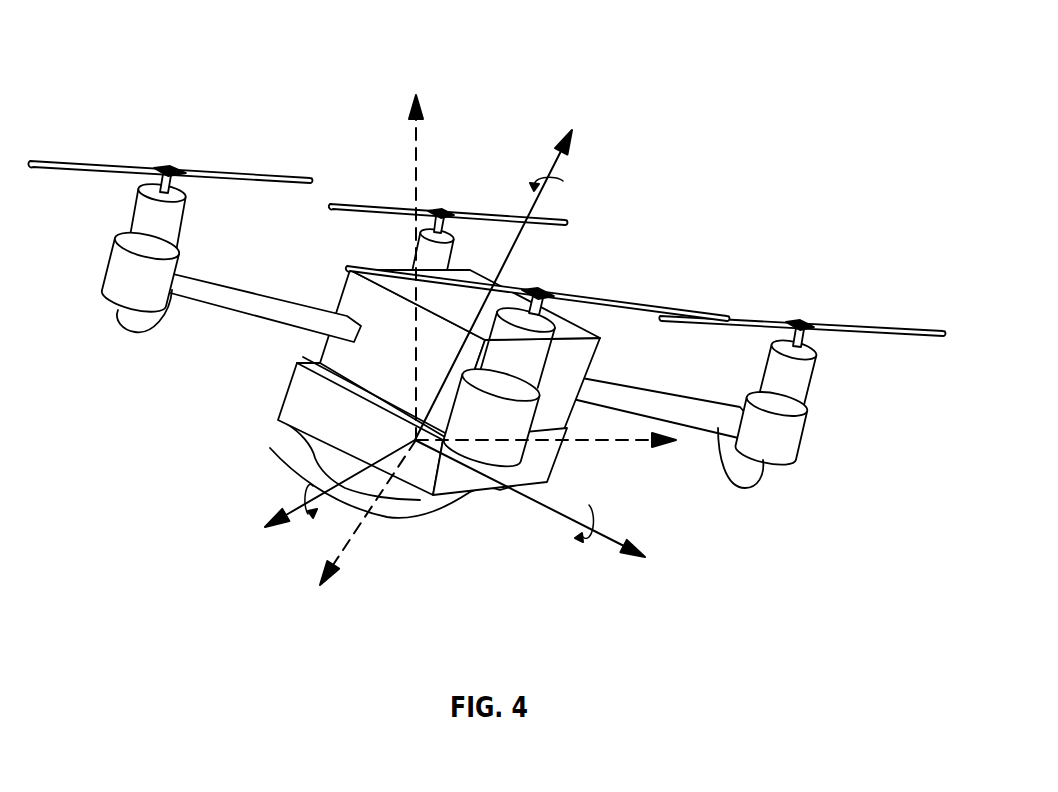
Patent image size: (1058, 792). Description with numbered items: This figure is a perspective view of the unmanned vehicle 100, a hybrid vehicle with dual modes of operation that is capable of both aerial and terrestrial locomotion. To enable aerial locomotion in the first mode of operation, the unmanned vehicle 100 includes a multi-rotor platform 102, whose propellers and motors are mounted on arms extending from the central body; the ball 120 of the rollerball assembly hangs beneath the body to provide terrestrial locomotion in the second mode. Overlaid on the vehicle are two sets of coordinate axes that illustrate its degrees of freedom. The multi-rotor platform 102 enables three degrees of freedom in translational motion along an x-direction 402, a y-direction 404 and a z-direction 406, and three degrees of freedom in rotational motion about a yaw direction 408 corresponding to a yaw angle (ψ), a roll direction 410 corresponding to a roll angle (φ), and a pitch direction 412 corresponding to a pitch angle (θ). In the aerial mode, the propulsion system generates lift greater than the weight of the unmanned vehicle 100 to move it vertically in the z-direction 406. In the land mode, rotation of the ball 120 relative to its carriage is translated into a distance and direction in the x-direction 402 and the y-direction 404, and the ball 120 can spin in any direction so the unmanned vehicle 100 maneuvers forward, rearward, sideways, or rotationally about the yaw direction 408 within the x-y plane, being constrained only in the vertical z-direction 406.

The unmanned vehicle 100 is at (239, 48).
The multi-rotor platform 102 is at (172, 120).
The ball 120 is at (423, 508).
The x-direction 402 is at (350, 538).
The y-direction 404 is at (577, 441).
The z-direction 406 is at (414, 167).
The yaw direction 408 is at (532, 203).
The roll direction 410 is at (318, 500).
The pitch direction 412 is at (553, 500).